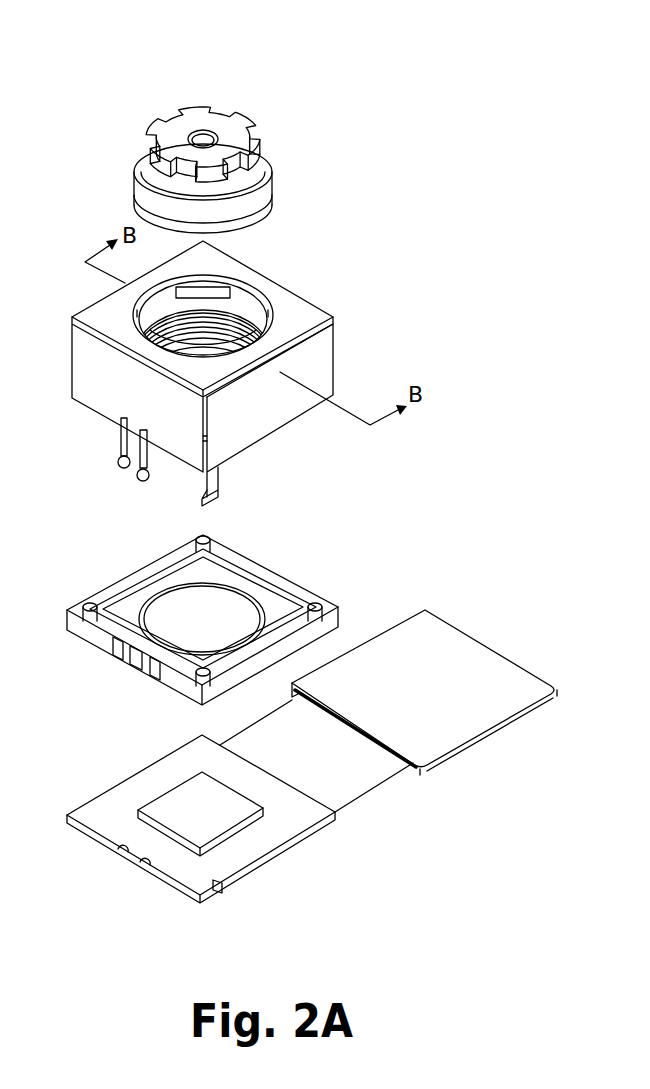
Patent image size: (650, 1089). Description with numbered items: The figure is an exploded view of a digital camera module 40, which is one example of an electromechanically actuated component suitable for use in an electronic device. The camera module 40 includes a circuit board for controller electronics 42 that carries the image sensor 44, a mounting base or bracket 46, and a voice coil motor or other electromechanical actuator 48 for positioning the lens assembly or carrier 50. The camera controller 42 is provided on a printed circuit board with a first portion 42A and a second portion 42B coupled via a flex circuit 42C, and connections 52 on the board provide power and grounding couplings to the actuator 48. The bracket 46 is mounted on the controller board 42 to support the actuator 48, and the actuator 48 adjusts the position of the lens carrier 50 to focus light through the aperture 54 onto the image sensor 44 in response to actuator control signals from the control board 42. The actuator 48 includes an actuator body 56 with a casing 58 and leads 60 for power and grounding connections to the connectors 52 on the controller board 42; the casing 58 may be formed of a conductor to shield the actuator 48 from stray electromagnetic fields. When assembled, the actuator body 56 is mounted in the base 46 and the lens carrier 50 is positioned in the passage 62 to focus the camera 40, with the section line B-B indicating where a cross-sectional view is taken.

The camera module 40 is at (105, 70).
The circuit board for controller electronics 42 is at (290, 868).
The first portion 42A is at (97, 810).
The second portion 42B is at (457, 733).
The flex circuit 42C is at (370, 773).
The image sensor 44 is at (173, 797).
The mounting base or bracket 46 is at (80, 608).
The voice coil motor or electromechanical actuator 48 is at (78, 362).
The lens assembly or carrier 50 is at (228, 124).
The connections 52 is at (140, 867).
The aperture 54 is at (230, 603).
The actuator body 56 is at (208, 420).
The casing 58 is at (332, 353).
The leads 60 is at (142, 470).
The passage 62 is at (205, 345).